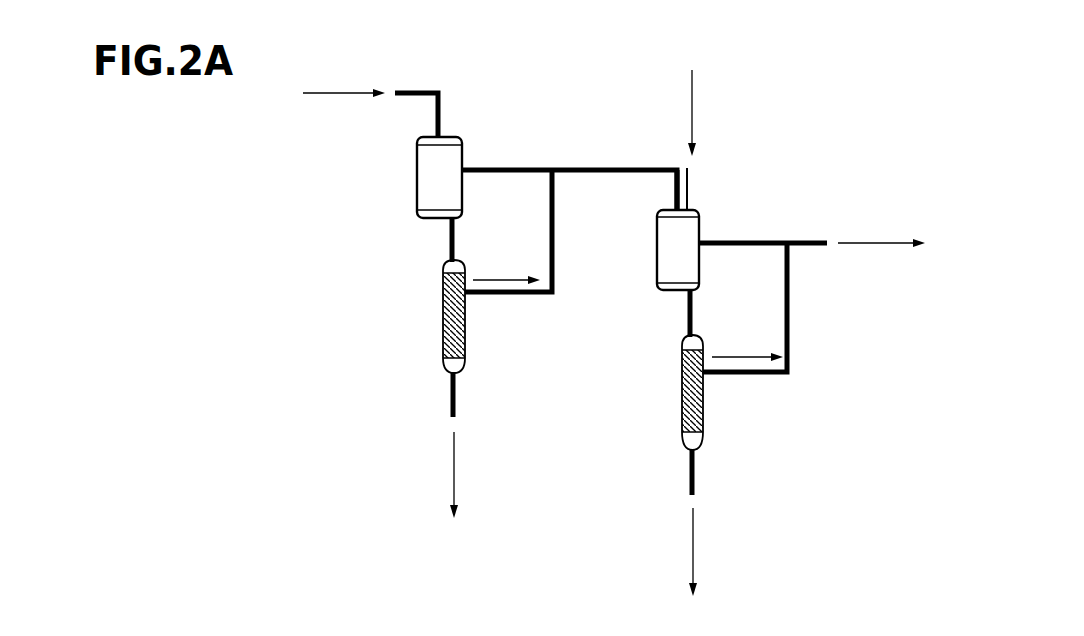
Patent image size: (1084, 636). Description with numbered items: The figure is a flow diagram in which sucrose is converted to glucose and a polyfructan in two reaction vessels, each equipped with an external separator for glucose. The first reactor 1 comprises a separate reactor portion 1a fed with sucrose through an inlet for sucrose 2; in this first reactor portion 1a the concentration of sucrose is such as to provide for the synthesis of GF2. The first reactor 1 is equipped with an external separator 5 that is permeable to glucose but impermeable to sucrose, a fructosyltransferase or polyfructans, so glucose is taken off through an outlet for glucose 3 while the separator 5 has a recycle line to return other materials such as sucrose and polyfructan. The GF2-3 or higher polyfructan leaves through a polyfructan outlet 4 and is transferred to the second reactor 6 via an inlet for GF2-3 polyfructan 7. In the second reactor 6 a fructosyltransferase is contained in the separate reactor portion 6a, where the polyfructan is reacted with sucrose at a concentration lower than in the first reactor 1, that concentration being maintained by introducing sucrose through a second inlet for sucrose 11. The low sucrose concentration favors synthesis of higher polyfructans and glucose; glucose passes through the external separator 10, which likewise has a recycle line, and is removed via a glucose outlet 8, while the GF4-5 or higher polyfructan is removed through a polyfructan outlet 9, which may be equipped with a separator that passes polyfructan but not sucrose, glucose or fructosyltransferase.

The first reactor 1 is at (366, 130).
The separate reactor portion 1a is at (416, 130).
The inlet for sucrose 2 is at (416, 101).
The outlet for glucose 3 is at (463, 445).
The outlet for GF2-3 or higher polyfructan 4 is at (645, 158).
The external separator 5 is at (433, 265).
The second reactor 6 is at (605, 205).
The separate reactor portion 6a is at (651, 205).
The inlet for GF2-3 polyfructan 7 is at (672, 176).
The outlet for glucose 8 is at (710, 523).
The outlet for GF4-5 or higher polyfructan 9 is at (812, 294).
The external separator 10 is at (670, 340).
The inlet for sucrose 11 is at (711, 140).